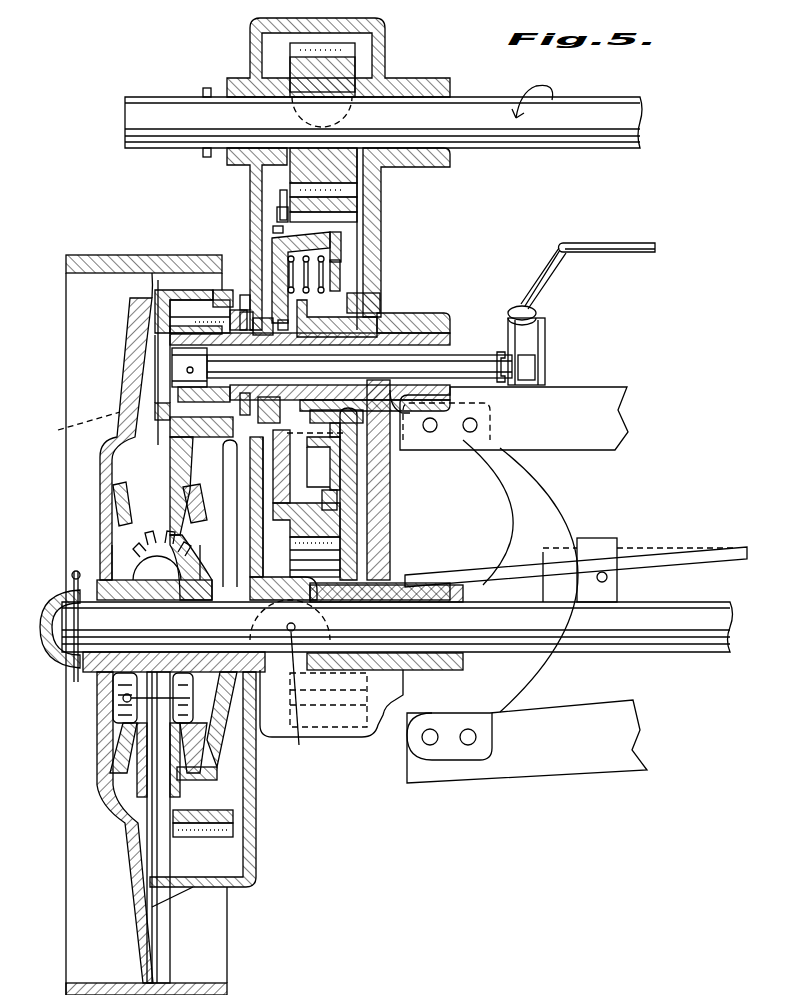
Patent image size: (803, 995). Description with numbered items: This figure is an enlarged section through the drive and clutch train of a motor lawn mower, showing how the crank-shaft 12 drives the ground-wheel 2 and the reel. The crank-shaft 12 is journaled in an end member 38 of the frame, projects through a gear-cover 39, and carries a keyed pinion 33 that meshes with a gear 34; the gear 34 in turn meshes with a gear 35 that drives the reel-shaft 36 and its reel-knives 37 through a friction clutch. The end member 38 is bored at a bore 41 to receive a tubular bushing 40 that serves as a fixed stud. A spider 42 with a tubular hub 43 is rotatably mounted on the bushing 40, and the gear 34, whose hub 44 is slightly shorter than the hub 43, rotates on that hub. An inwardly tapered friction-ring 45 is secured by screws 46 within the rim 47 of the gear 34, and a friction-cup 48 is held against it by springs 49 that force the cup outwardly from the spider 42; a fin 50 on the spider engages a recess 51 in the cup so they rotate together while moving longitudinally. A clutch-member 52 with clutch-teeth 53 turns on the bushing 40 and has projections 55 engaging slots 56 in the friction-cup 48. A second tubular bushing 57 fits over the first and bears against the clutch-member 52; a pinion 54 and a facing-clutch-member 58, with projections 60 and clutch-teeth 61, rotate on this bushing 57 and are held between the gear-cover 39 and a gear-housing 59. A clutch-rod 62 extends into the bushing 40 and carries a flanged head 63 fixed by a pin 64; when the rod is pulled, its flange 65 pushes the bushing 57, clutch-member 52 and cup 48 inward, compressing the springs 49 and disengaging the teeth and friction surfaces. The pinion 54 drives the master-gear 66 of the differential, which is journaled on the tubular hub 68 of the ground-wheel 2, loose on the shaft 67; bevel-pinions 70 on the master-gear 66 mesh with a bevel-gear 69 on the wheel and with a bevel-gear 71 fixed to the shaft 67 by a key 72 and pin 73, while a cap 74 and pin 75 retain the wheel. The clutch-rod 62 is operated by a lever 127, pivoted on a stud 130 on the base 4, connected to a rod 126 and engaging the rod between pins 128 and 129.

The ground-wheel 2 is at (93, 256).
The base 4 is at (388, 572).
The crank-shaft 12 is at (608, 163).
The pinion 33 is at (347, 67).
The gear 34 is at (372, 215).
The gear 35 is at (345, 558).
The reel-shaft 36 is at (705, 566).
The reel-knives 37 is at (618, 420).
The end member 38 is at (378, 36).
The gear-cover 39 is at (252, 36).
The tubular bushing 40 is at (446, 346).
The bore 41 is at (420, 335).
The spider 42 is at (342, 252).
The tubular hub 43 is at (380, 322).
The hub 44 is at (318, 322).
The friction-ring 45 is at (273, 230).
The screws 46 is at (278, 212).
The rim 47 is at (286, 196).
The friction-cup 48 is at (272, 255).
The springs 49 is at (310, 278).
The fin 50 is at (283, 455).
The recess 51 is at (337, 495).
The clutch-member 52 is at (230, 313).
The clutch-teeth 53 is at (245, 330).
The pinion 54 is at (175, 322).
The projections 55 is at (285, 325).
The slots 56 is at (262, 320).
The tubular bushing 57 is at (158, 338).
The facing-clutch-member 58 is at (230, 445).
The gear-housing 59 is at (155, 294).
The projections 60 is at (112, 452).
The clutch-teeth 61 is at (78, 427).
The clutch-rod 62 is at (512, 390).
The flanged head 63 is at (185, 370).
The pin 64 is at (183, 378).
The flange 65 is at (178, 393).
The master-gear 66 is at (213, 417).
The shaft 67 is at (710, 660).
The tubular hub 68 is at (113, 680).
The bevel-gear 69 is at (115, 500).
The bevel-pinions 70 is at (137, 542).
The bevel-gear 71 is at (212, 763).
The key 72 is at (263, 602).
The pin 73 is at (356, 670).
The cap 74 is at (58, 598).
The pin 75 is at (74, 583).
The rod 126 is at (607, 257).
The lever 127 is at (550, 280).
The pin 128 is at (503, 362).
The pin 129 is at (526, 375).
The stud 130 is at (535, 315).